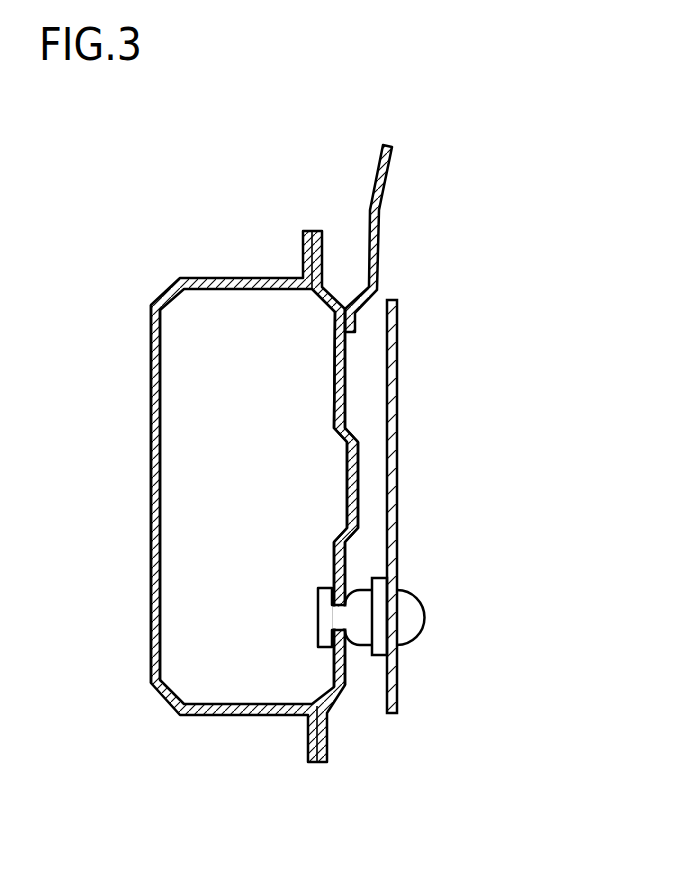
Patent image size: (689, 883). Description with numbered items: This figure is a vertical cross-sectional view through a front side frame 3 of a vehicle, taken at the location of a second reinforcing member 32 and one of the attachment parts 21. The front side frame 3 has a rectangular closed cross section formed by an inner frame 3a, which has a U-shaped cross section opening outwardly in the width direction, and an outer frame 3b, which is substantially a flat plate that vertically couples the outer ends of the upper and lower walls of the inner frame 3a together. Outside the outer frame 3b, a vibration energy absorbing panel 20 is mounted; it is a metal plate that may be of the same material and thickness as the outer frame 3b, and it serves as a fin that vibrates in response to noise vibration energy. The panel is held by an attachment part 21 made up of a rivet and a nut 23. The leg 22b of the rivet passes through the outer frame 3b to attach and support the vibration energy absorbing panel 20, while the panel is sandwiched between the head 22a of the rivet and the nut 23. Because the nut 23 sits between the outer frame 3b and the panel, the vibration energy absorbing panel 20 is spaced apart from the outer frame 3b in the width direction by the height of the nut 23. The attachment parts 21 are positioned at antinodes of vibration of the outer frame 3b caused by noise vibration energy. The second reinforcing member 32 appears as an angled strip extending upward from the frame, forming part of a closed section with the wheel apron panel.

The front side frame 3 is at (267, 476).
The inner frame 3a is at (150, 447).
The outer frame 3b is at (358, 467).
The vibration energy absorbing panel 20 is at (393, 498).
The attachment part 21 is at (463, 658).
The head 22a is at (415, 645).
The leg 22b is at (322, 619).
The nut 23 is at (363, 633).
The second reinforcing member 32 is at (387, 173).